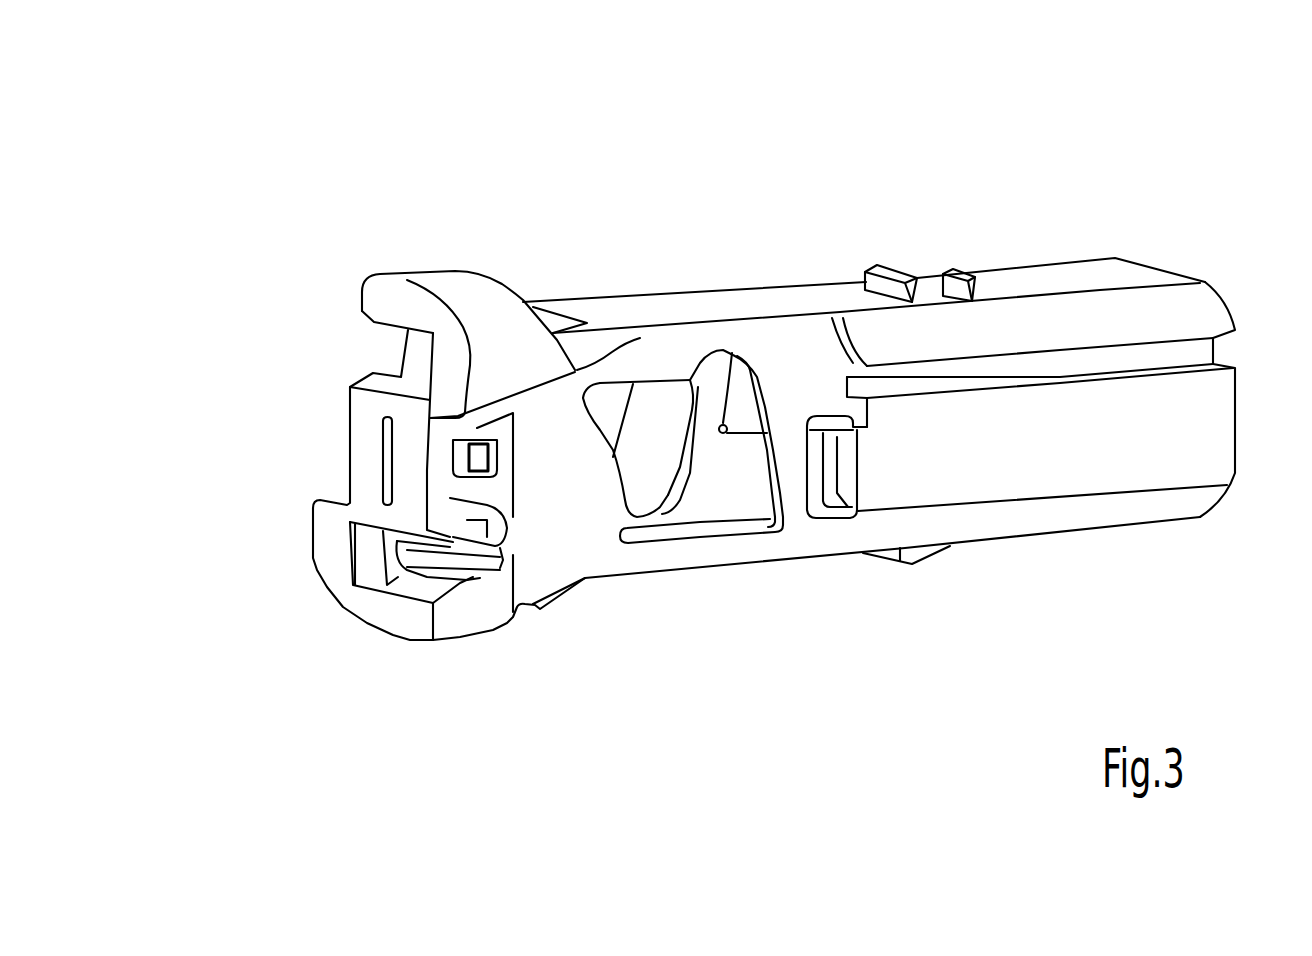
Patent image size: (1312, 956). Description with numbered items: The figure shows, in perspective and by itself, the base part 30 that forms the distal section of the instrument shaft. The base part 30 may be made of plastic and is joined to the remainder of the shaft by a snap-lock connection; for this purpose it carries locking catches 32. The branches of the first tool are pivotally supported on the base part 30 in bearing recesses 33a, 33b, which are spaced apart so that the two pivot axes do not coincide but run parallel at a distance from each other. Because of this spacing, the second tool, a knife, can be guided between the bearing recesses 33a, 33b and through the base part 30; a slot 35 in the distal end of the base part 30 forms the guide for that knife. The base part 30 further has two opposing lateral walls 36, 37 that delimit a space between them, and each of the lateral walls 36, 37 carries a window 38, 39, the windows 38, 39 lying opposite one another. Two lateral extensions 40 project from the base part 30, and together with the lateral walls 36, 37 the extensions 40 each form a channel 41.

The base part 30 is at (1078, 87).
The locking catches 32 is at (890, 273).
The bearing recess 33a is at (427, 773).
The bearing recess 33b is at (380, 351).
The slot 35 is at (372, 459).
The lateral wall 36 is at (663, 360).
The lateral wall 37 is at (688, 678).
The window 38 is at (827, 673).
The window 39 is at (598, 712).
The lateral extensions 40 is at (763, 730).
The channel 41 is at (823, 400).